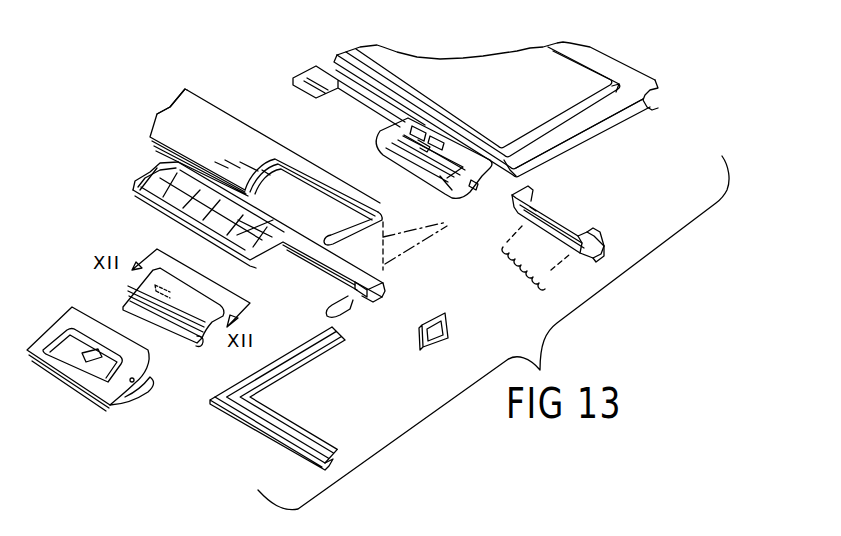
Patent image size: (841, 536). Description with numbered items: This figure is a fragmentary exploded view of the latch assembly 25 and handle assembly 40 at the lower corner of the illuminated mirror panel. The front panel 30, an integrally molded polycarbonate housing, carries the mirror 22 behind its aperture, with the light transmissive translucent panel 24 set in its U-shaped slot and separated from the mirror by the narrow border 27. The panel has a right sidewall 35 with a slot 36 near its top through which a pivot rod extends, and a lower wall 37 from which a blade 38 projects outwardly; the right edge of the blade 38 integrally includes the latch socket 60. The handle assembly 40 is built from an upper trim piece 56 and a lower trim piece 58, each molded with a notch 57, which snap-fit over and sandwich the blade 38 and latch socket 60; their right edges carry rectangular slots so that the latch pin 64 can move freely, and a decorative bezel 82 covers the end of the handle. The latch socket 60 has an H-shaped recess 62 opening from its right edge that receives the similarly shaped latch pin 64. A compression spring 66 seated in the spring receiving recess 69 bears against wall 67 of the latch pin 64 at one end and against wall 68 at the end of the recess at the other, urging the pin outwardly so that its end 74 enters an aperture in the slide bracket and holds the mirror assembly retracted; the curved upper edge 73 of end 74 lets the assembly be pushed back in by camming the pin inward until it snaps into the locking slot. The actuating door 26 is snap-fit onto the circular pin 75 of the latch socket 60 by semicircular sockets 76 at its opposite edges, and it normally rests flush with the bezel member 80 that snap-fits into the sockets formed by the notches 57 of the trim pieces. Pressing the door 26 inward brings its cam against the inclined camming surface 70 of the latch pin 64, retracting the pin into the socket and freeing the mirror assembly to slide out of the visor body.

The mirror 22 is at (519, 93).
The translucent panel 24 is at (623, 86).
The latch assembly 25 is at (576, 291).
The actuating door 26 is at (137, 308).
The border 27 is at (590, 93).
The front panel 30 is at (598, 55).
The right sidewall 35 is at (617, 112).
The slot 36 is at (655, 110).
The lower wall 37 is at (508, 170).
The blade 38 is at (325, 88).
The handle assembly 40 is at (149, 118).
The upper trim piece 56 is at (170, 107).
The notch 57 is at (270, 182).
The lower trim piece 58 is at (140, 203).
The latch socket 60 is at (435, 210).
The H-shaped recess 62 is at (474, 193).
The latch pin 64 is at (561, 212).
The compression spring 66 is at (518, 266).
The wall 67 is at (583, 233).
The wall 68 is at (423, 147).
The spring receiving recess 69 is at (430, 177).
The inclined camming surface 70 is at (524, 200).
The upper edge 73 is at (600, 227).
The end 74 is at (607, 243).
The circular pin 75 is at (391, 160).
The semicircular sockets 76 is at (198, 349).
The bezel member 80 is at (139, 406).
The decorative bezel 82 is at (422, 343).